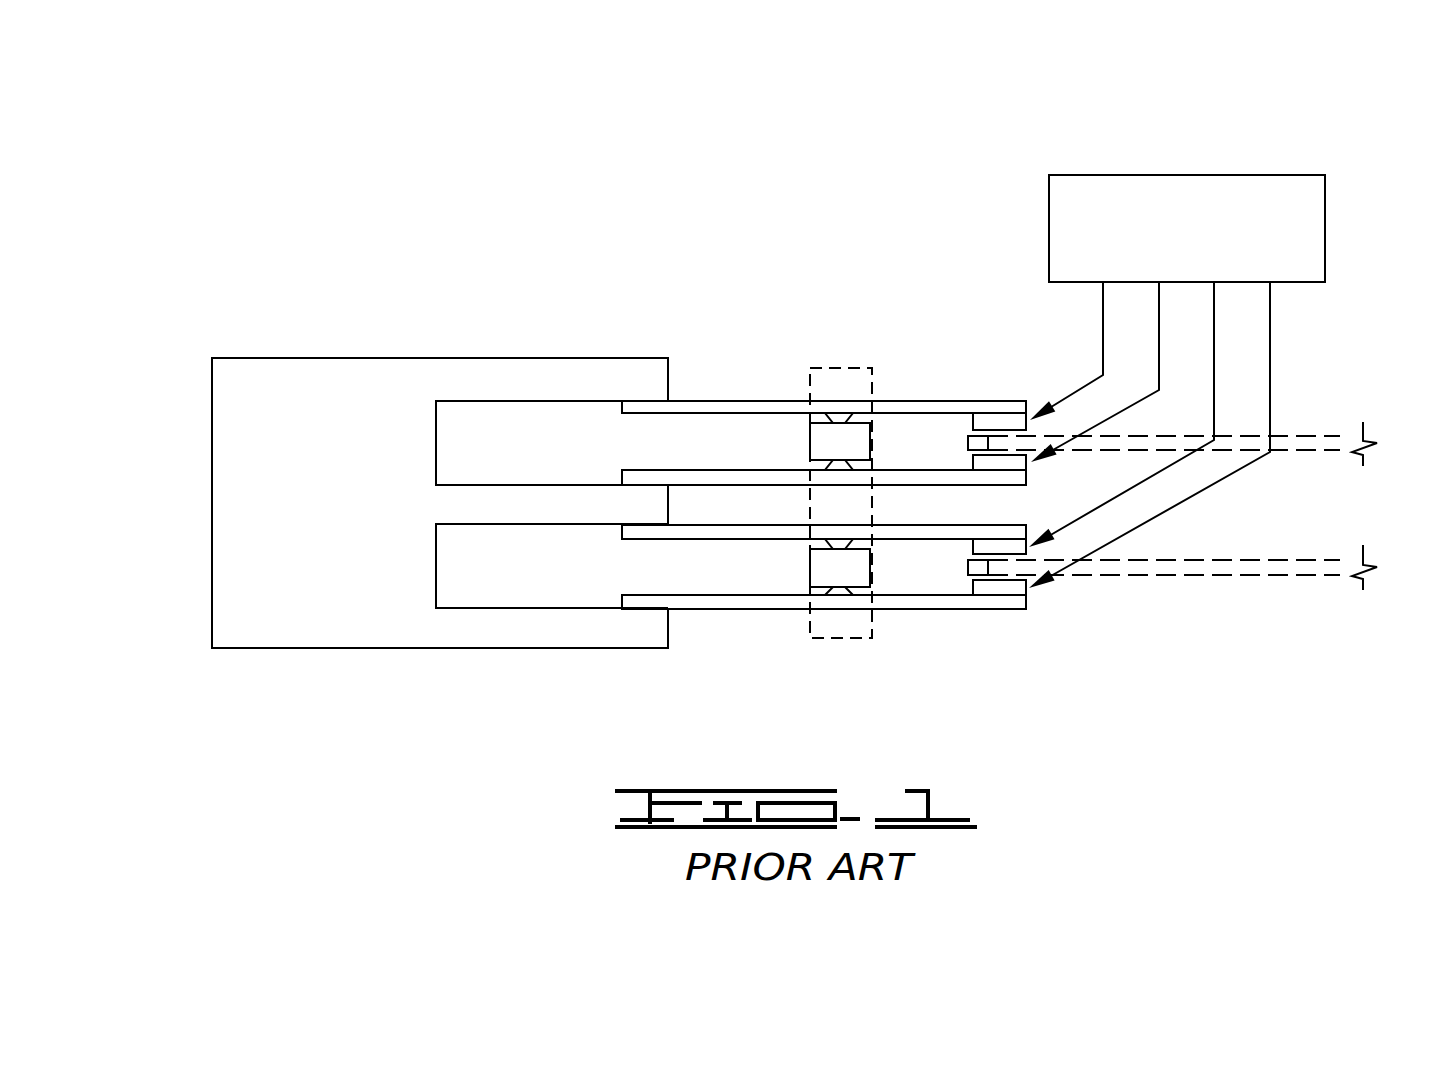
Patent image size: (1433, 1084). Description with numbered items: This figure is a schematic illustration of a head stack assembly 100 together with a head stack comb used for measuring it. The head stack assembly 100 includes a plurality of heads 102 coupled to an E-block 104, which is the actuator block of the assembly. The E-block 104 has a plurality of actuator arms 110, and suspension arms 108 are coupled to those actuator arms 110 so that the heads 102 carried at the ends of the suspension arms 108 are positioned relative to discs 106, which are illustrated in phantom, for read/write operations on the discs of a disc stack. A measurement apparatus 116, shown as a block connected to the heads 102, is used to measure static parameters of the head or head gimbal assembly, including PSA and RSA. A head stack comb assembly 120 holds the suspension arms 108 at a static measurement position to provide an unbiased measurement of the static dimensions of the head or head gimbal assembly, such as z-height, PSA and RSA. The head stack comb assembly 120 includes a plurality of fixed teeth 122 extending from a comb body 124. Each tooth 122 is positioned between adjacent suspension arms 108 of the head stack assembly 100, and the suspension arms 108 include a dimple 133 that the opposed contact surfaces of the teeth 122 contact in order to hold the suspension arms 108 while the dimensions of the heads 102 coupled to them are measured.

The head stack assembly 100 is at (345, 190).
The heads 102 is at (990, 420).
The E-block 104 is at (198, 420).
The discs 106 is at (1320, 437).
The suspension arms 108 is at (705, 400).
The actuator arms 110 is at (480, 358).
The measurement apparatus 116 is at (1325, 213).
The head stack comb assembly 120 is at (817, 335).
The fixed teeth 122 is at (810, 442).
The comb body 124 is at (875, 368).
The dimple 133 is at (835, 412).